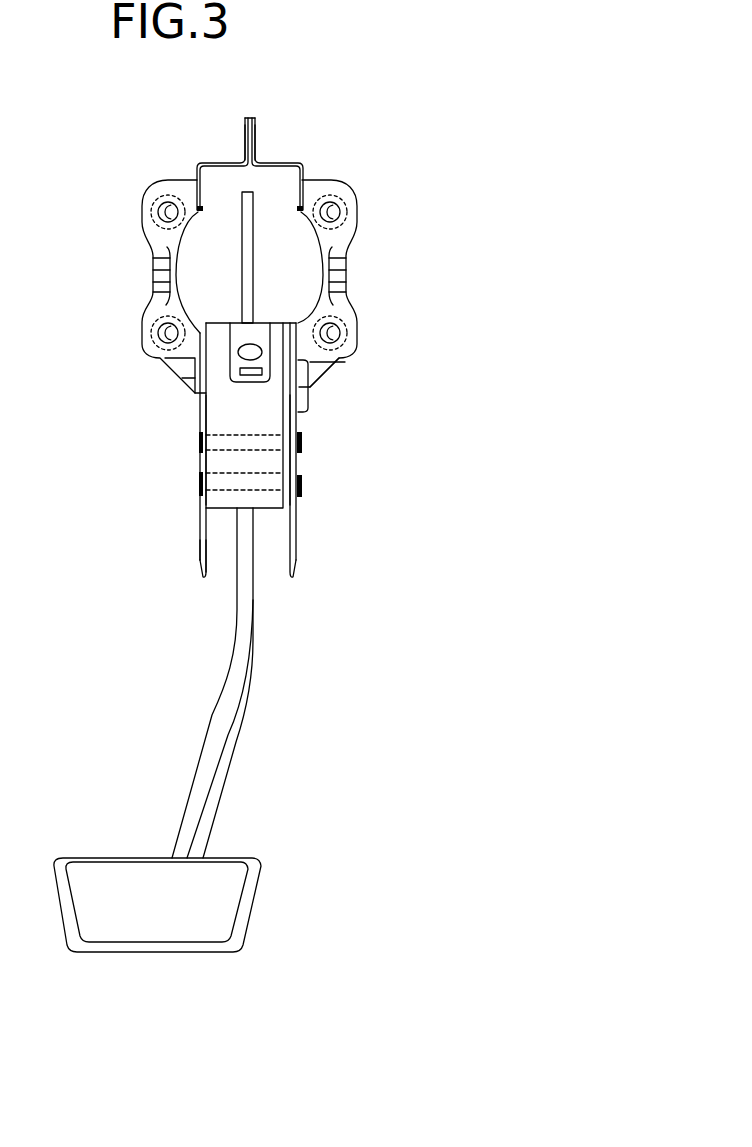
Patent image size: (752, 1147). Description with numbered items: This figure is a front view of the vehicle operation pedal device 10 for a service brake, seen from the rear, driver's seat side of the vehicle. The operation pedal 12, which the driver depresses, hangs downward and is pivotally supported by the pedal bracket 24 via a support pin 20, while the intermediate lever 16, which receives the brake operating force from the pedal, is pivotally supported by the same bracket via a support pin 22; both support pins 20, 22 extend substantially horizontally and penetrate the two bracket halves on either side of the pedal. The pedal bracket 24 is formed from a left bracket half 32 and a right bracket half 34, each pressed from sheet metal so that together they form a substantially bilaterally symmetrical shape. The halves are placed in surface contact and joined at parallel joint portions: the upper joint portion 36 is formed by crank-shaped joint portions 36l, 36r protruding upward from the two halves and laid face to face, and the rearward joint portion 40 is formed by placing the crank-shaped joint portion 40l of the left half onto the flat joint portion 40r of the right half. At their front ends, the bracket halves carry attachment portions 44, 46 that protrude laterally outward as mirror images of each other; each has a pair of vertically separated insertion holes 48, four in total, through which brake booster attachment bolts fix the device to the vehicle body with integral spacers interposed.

The operation pedal device 10 is at (387, 95).
The operation pedal 12 is at (228, 775).
The intermediate lever 16 is at (248, 257).
The support pin 20 is at (220, 482).
The support pin 22 is at (220, 443).
The pedal bracket 24 is at (156, 544).
The left bracket half 32 is at (122, 168).
The right bracket half 34 is at (365, 393).
The joint portion 36 is at (262, 103).
The joint portion 36l is at (245, 135).
The joint portion 36r is at (255, 138).
The joint portion 40 is at (307, 426).
The joint portion 40l is at (285, 411).
The joint portion 40r is at (292, 467).
The attachment portion 44 is at (162, 250).
The attachment portion 46 is at (337, 298).
The insertion hole 48 is at (168, 212).